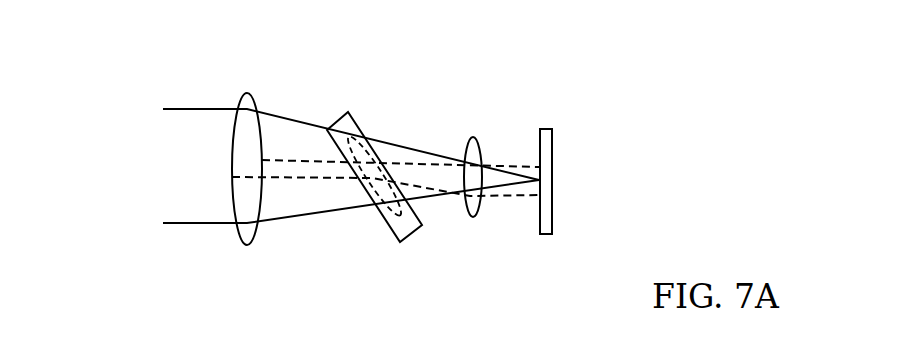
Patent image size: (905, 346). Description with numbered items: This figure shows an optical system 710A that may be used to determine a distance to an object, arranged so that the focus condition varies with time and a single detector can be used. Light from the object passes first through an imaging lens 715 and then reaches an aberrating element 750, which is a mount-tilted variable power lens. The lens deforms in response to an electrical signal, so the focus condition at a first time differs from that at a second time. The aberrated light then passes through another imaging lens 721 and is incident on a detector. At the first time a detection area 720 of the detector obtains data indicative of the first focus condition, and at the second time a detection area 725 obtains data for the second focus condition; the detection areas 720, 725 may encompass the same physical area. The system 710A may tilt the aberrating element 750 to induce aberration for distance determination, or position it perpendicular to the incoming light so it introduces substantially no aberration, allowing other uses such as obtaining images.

The optical system 710A is at (133, 157).
The imaging lens 715 is at (246, 93).
The aberrating element 750 is at (376, 155).
The imaging lens 721 is at (472, 137).
The detection area 720 is at (552, 176).
The detection area 725 is at (552, 184).